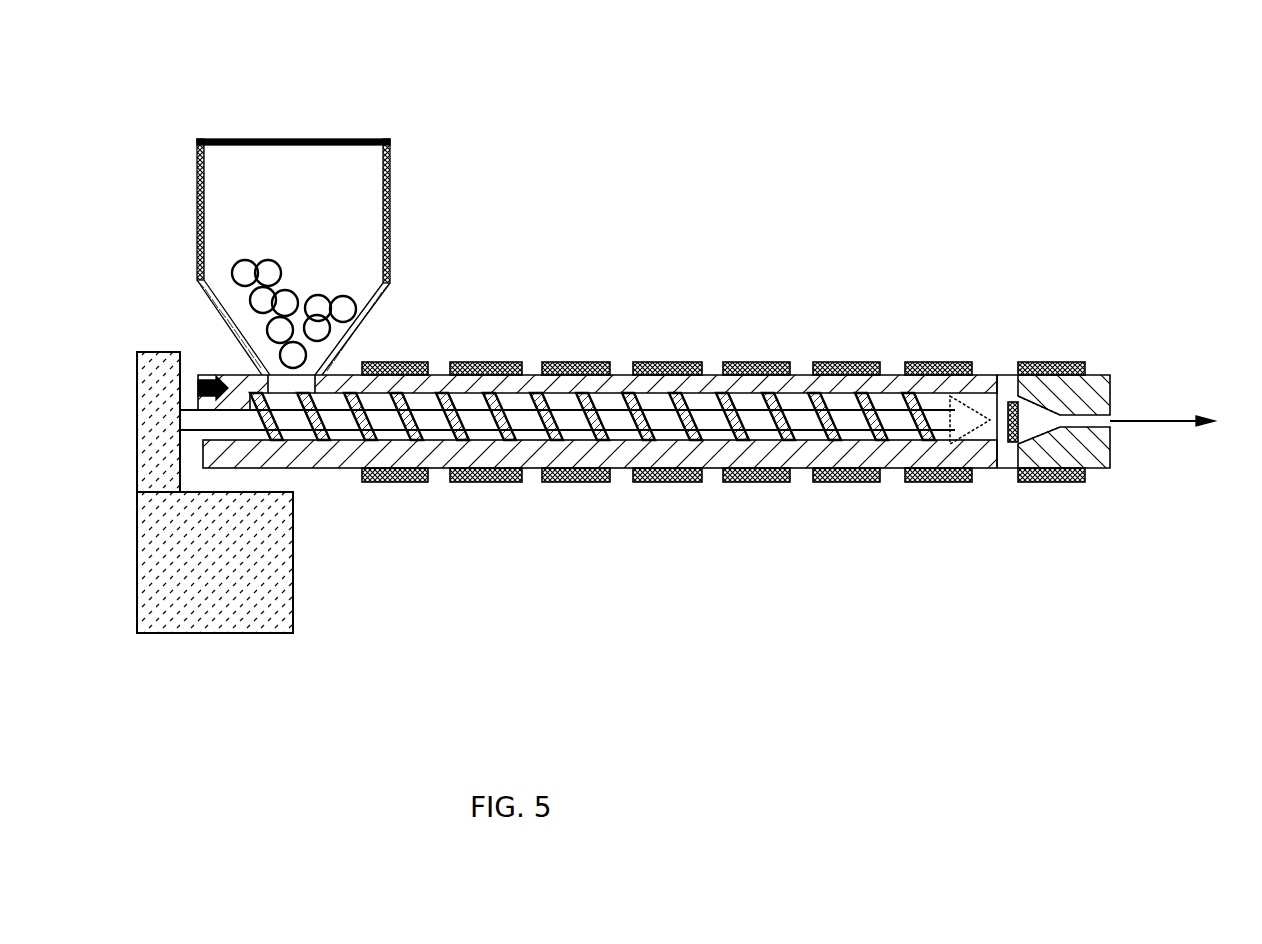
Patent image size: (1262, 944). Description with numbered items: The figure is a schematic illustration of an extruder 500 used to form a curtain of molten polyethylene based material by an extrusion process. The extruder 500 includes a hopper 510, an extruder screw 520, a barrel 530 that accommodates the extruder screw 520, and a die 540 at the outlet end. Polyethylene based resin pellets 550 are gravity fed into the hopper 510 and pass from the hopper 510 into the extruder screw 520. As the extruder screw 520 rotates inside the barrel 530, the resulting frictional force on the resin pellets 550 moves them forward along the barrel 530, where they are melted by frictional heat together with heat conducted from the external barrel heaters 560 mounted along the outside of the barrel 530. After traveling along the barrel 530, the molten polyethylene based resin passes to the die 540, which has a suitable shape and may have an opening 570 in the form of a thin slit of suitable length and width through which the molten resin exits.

The extruder 500 is at (795, 44).
The hopper 510 is at (325, 198).
The extruder screw 520 is at (527, 375).
The barrel 530 is at (342, 373).
The die 540 is at (1100, 373).
The polyethylene based resin pellets 550 is at (253, 300).
The external barrel heaters 560 is at (748, 362).
The opening 570 is at (1110, 420).